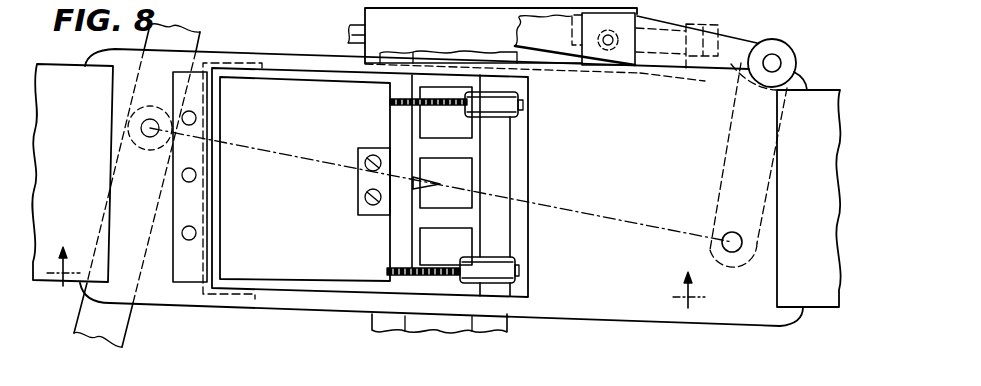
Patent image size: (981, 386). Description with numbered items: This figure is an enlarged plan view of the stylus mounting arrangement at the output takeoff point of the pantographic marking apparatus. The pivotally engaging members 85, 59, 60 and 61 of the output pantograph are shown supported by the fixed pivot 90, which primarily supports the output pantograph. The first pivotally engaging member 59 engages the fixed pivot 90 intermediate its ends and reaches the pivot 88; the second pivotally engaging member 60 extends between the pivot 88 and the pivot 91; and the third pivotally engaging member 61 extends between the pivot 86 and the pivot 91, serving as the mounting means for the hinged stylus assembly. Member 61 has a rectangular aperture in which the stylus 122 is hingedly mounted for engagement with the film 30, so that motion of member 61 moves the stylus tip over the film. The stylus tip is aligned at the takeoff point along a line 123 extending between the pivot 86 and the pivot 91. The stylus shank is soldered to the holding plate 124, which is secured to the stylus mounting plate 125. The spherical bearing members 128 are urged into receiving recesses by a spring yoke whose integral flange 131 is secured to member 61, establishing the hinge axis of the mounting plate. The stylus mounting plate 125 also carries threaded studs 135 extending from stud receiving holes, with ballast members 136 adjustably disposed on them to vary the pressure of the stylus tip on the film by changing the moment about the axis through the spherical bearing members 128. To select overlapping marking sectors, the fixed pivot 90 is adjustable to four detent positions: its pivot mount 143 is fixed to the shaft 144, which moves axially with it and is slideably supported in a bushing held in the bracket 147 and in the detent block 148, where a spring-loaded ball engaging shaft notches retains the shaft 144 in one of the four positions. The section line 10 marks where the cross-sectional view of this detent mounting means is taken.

The section line 10 is at (376, 267).
The film 30 is at (473, 329).
The first pivotally engaging member 59 is at (741, 64).
The second pivotally engaging member 60 is at (723, 183).
The third pivotally engaging member 61 is at (633, 310).
The pivotally engaging member 85 is at (122, 326).
The pivot 86 is at (141, 130).
The pivot 88 is at (782, 63).
The fixed pivot 90 is at (604, 48).
The pivot 91 is at (733, 253).
The stylus 122 is at (410, 190).
The line 123 is at (364, 164).
The holding plate 124 is at (370, 149).
The stylus mounting plate 125 is at (316, 261).
The spherical bearing members 128 is at (249, 79).
The integral flange 131 is at (180, 213).
The threaded studs 135 is at (447, 275).
The ballast members 136 is at (513, 265).
The pivot mount 143 is at (625, 68).
The shaft 144 is at (684, 70).
The bracket 147 is at (745, 30).
The detent block 148 is at (365, 15).